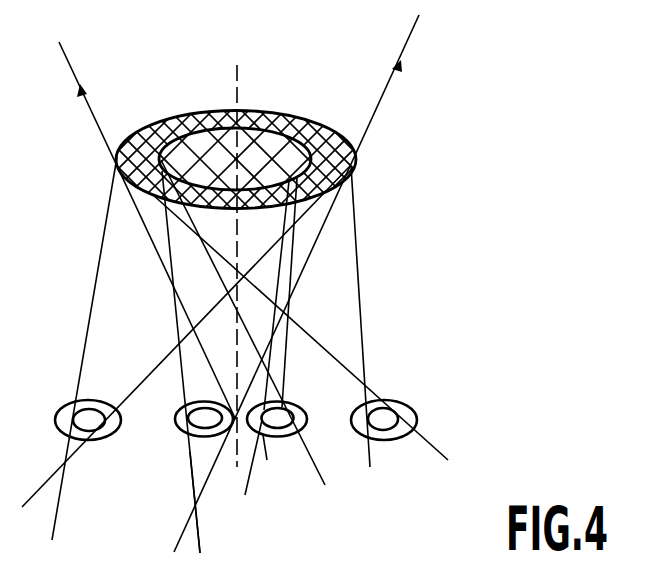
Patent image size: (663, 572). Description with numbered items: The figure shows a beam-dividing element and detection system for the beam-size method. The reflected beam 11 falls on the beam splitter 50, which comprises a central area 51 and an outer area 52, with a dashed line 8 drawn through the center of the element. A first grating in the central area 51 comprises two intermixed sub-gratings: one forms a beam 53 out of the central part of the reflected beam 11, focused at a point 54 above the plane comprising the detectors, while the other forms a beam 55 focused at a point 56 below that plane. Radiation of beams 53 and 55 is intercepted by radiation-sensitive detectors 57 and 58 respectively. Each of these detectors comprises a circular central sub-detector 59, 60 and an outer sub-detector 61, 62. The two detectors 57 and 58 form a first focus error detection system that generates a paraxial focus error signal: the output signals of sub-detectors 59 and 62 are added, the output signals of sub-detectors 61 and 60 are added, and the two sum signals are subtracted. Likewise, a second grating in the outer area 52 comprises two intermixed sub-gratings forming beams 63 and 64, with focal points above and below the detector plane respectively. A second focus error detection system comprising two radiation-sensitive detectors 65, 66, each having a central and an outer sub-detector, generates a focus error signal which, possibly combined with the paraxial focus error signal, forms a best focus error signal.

The optical axis 8 is at (246, 70).
The reflected beam 11 is at (75, 81).
The beam splitter 50 is at (356, 166).
The central area 51 is at (300, 118).
The outer area 52 is at (199, 110).
The beam 53 is at (322, 466).
The point 54 is at (268, 372).
The beam 55 is at (200, 532).
The point 56 is at (193, 492).
The radiation-sensitive detector 57 is at (307, 410).
The radiation-sensitive detector 58 is at (180, 424).
The circular central sub-detector 59 is at (267, 457).
The circular central sub-detector 60 is at (185, 406).
The outer sub-detector 61 is at (251, 461).
The outer sub-detector 62 is at (183, 438).
The beam 63 is at (358, 268).
The beam 64 is at (98, 268).
The radiation-sensitive detector 65 is at (410, 405).
The radiation-sensitive detector 66 is at (63, 410).